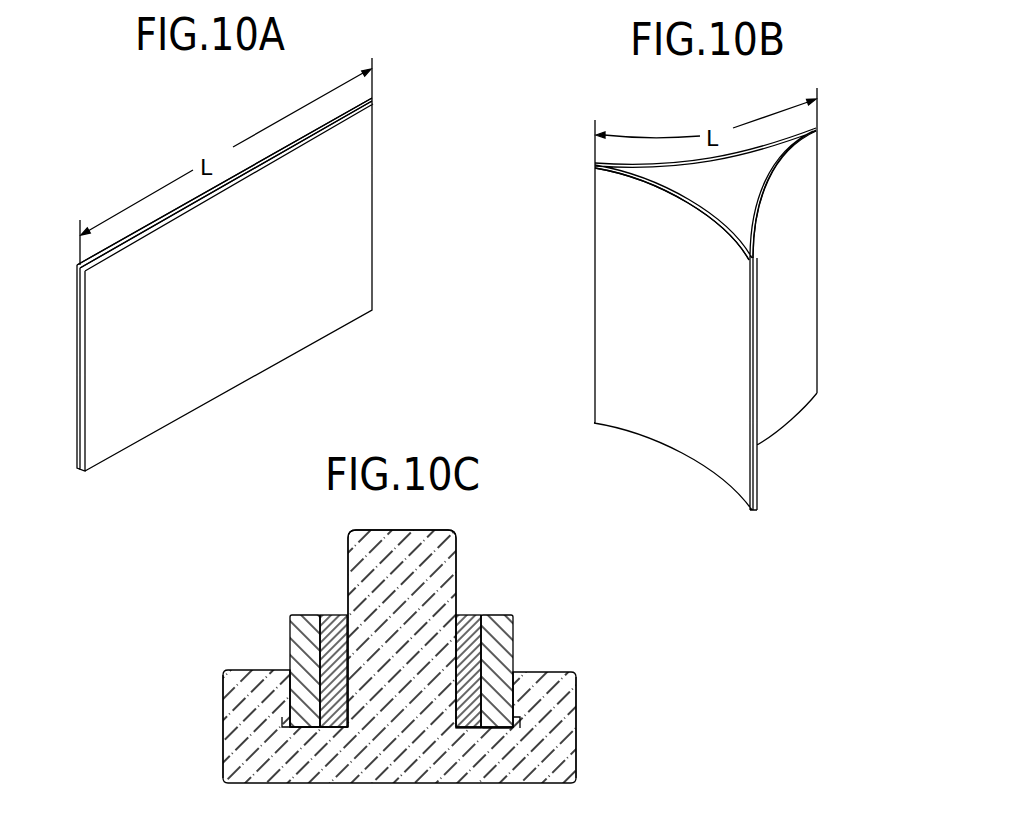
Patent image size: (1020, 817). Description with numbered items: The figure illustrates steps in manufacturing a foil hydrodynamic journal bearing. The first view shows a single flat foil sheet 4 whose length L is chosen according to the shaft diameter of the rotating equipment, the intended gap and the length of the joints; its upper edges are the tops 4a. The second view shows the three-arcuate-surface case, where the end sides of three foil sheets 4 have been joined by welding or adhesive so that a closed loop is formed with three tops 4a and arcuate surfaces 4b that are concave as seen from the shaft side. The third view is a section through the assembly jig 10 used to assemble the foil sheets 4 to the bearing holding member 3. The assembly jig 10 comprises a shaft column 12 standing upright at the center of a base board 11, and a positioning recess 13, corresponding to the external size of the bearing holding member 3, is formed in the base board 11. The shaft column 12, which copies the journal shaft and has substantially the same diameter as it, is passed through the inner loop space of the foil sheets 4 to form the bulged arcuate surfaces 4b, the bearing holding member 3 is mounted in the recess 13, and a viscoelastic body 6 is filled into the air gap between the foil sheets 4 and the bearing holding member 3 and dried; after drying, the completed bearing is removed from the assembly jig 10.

In FIG. 10C, the bearing holding member 3 is at (513, 617).
In FIG. 10A, the foil sheet 4 is at (375, 251).
In FIG. 10B, the foil sheet 4 is at (821, 269).
In FIG. 10C, the foil sheet 4 is at (462, 615).
In FIG. 10A, the top 4a is at (373, 100).
In FIG. 10B, the top 4a is at (820, 128).
In FIG. 10B, the arcuate surface 4b is at (747, 150).
In FIG. 10C, the viscoelastic body 6 is at (481, 615).
In FIG. 10C, the assembly jig 10 is at (604, 661).
In FIG. 10C, the base board 11 is at (568, 745).
In FIG. 10C, the shaft column 12 is at (452, 540).
In FIG. 10C, the positioning recess 13 is at (515, 673).